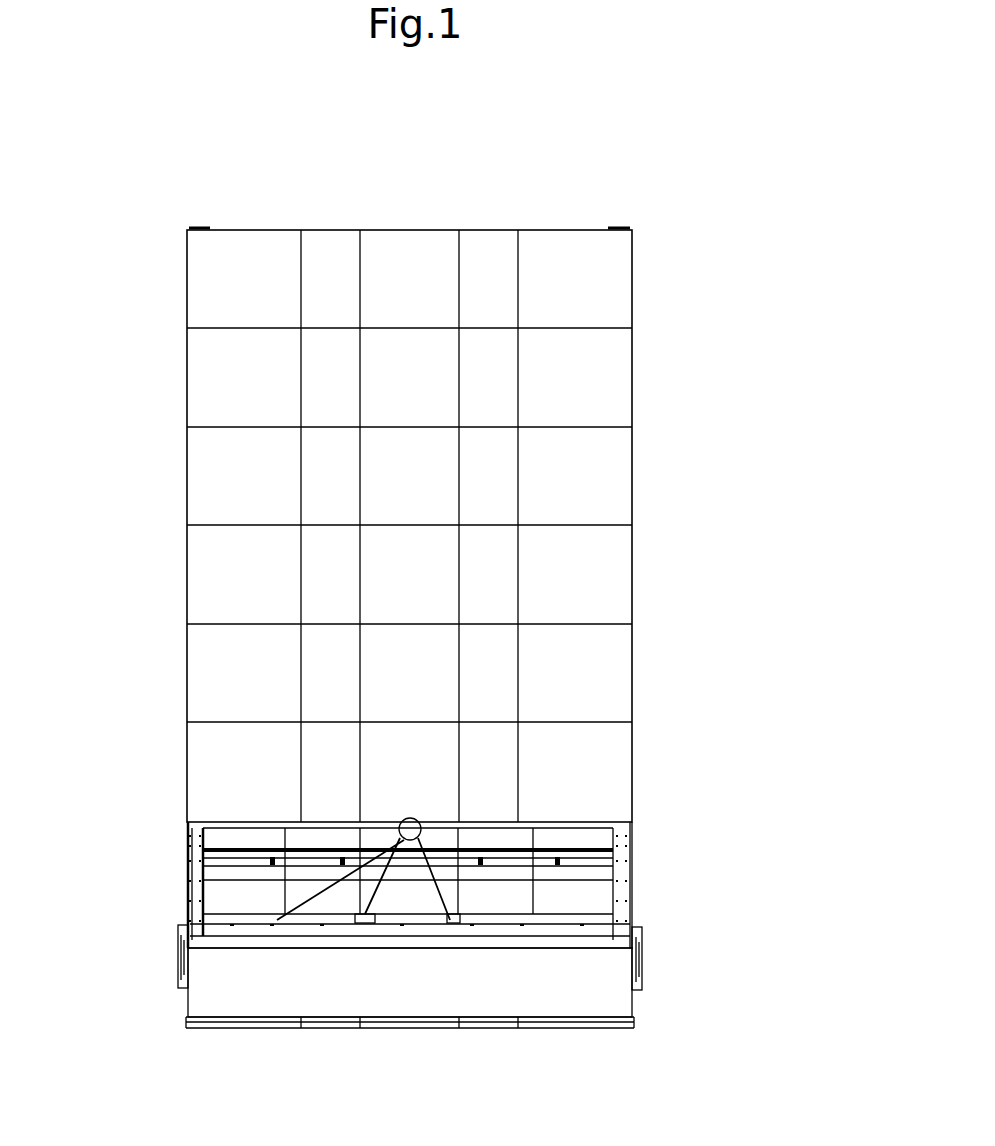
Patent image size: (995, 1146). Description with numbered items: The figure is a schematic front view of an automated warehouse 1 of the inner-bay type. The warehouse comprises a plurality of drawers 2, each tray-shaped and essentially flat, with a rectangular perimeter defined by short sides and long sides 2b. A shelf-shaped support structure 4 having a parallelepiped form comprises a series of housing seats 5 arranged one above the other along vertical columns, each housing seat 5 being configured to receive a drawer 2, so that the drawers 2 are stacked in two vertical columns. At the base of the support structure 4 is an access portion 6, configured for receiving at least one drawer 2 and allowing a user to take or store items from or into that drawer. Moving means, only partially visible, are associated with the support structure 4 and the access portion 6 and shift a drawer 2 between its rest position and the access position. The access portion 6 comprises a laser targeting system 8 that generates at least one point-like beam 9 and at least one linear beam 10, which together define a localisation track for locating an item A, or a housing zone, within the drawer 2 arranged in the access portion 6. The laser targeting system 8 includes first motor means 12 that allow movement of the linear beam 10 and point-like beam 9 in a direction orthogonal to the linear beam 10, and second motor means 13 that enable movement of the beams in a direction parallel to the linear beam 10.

The automated warehouse 1 is at (600, 190).
The drawer 2 is at (600, 870).
The long side 2b is at (540, 930).
The support structure 4 is at (633, 578).
The housing seat 5 is at (186, 872).
The access portion 6 is at (160, 947).
The laser targeting system 8 is at (415, 814).
The point-like beam 9 is at (384, 868).
The linear beam 10 is at (410, 895).
The first motor means 12 is at (420, 828).
The second motor means 13 is at (398, 826).
The item A is at (373, 923).